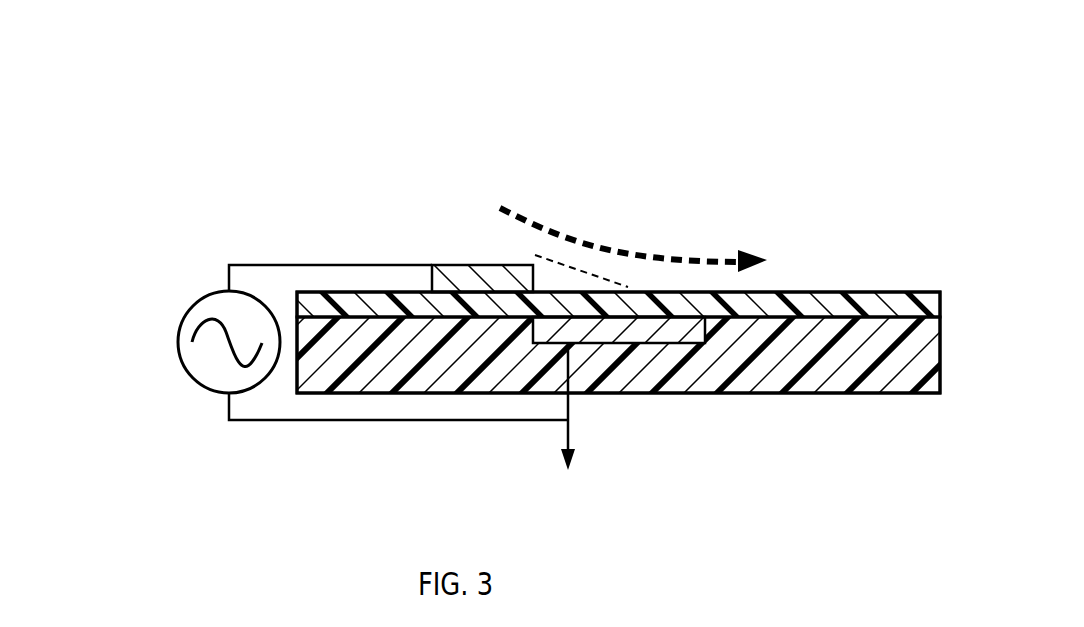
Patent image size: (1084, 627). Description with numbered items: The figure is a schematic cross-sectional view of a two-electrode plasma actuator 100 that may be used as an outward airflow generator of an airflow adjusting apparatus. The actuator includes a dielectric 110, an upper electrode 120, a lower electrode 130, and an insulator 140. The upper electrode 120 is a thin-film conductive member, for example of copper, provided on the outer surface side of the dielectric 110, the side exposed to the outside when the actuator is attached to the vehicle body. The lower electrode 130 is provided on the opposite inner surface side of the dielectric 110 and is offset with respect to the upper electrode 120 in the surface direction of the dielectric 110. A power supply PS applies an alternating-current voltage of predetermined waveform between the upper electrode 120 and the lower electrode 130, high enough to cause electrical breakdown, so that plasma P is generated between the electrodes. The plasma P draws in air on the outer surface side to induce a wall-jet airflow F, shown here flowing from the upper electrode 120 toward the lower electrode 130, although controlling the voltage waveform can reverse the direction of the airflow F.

The two-electrode plasma actuator 100 is at (365, 147).
The dielectric 110 is at (828, 290).
The upper electrode 120 is at (477, 265).
The lower electrode 130 is at (645, 338).
The insulator 140 is at (772, 393).
The power supply PS is at (195, 307).
The plasma P is at (576, 262).
The airflow F is at (682, 260).